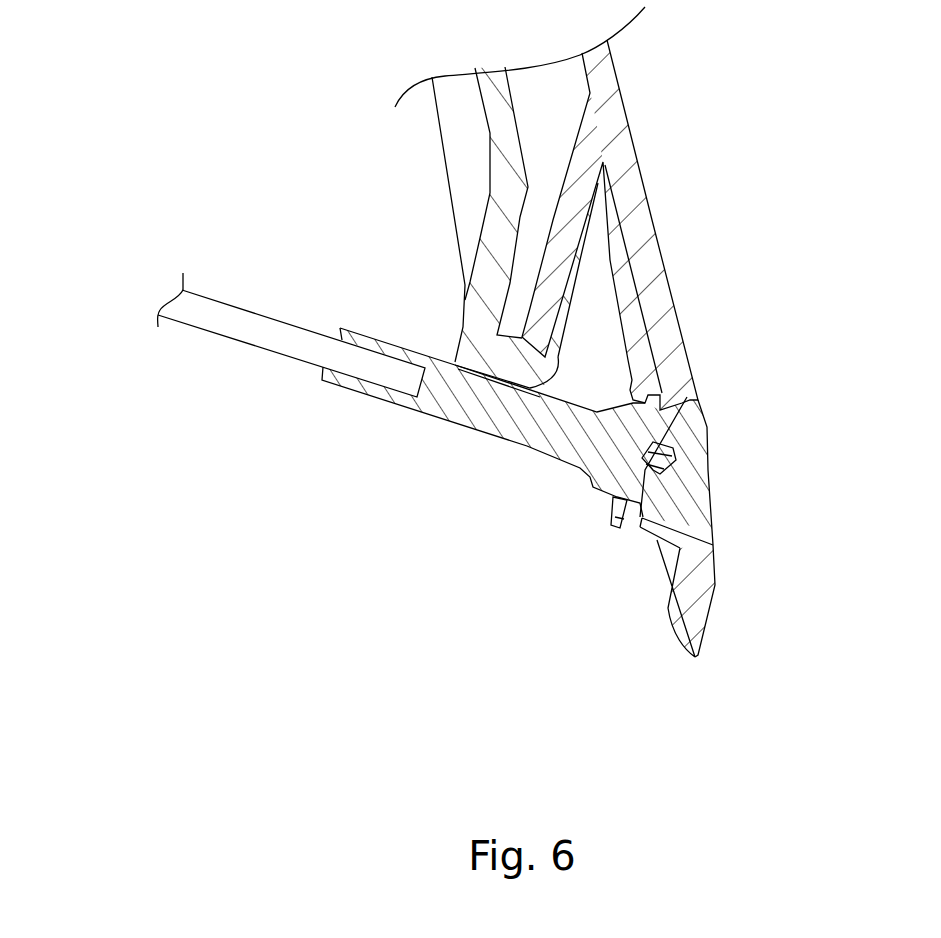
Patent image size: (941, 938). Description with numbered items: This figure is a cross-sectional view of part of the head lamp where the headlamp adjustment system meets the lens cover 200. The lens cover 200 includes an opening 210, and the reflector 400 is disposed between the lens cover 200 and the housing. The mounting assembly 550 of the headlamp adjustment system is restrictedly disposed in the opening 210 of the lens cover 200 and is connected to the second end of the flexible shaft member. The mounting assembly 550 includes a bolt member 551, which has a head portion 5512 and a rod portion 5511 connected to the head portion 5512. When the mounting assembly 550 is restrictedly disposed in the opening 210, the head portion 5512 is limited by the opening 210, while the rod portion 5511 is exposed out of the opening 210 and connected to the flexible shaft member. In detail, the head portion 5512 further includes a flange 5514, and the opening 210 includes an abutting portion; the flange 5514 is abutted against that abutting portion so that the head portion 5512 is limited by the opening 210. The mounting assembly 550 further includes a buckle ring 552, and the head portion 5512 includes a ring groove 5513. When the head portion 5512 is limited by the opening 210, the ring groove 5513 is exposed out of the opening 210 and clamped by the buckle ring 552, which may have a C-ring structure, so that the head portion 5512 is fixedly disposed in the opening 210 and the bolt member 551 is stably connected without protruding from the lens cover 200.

The reflector 400 is at (467, 158).
The lens cover 200 is at (623, 193).
The opening 210 is at (680, 527).
The mounting assembly 550 is at (435, 531).
The bolt member 551 is at (435, 484).
The rod portion 5511 is at (453, 402).
The head portion 5512 is at (590, 483).
The ring groove 5513 is at (652, 397).
The flange 5514 is at (682, 400).
The buckle ring 552 is at (617, 615).